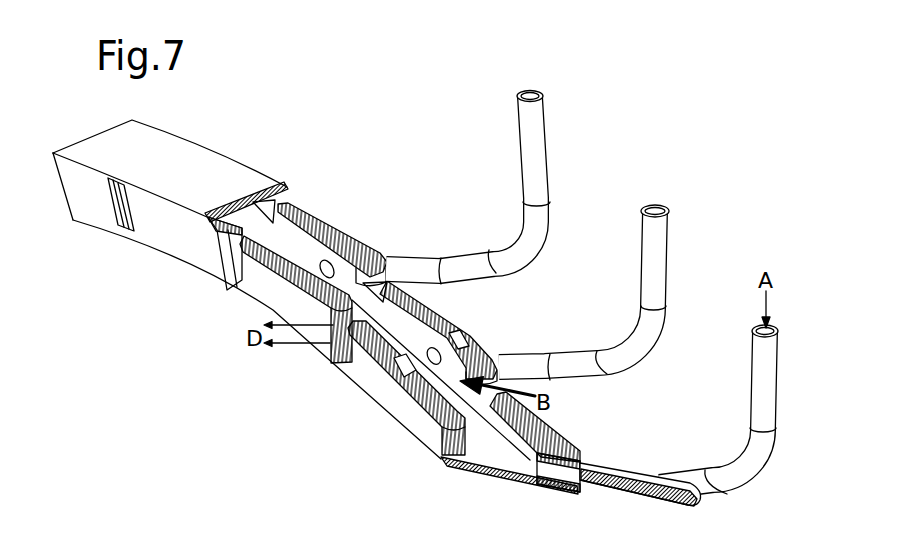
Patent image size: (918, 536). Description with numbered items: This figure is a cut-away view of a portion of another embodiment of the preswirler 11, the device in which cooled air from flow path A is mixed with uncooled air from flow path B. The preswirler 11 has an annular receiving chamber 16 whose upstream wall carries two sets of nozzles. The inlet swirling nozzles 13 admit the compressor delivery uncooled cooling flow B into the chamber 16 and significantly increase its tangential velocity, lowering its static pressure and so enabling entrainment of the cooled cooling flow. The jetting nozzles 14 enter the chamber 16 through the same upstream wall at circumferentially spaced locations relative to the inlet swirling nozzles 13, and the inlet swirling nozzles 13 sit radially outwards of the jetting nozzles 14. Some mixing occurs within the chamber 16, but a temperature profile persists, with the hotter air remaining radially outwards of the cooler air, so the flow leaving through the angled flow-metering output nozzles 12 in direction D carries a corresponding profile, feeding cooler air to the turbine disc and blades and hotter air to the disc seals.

The preswirler 11 is at (331, 192).
The flow-metering angled output nozzles 12 is at (228, 273).
The inlet swirling nozzles 13 is at (504, 377).
The jetting nozzles 14 is at (440, 350).
The receiving chamber 16 is at (303, 248).